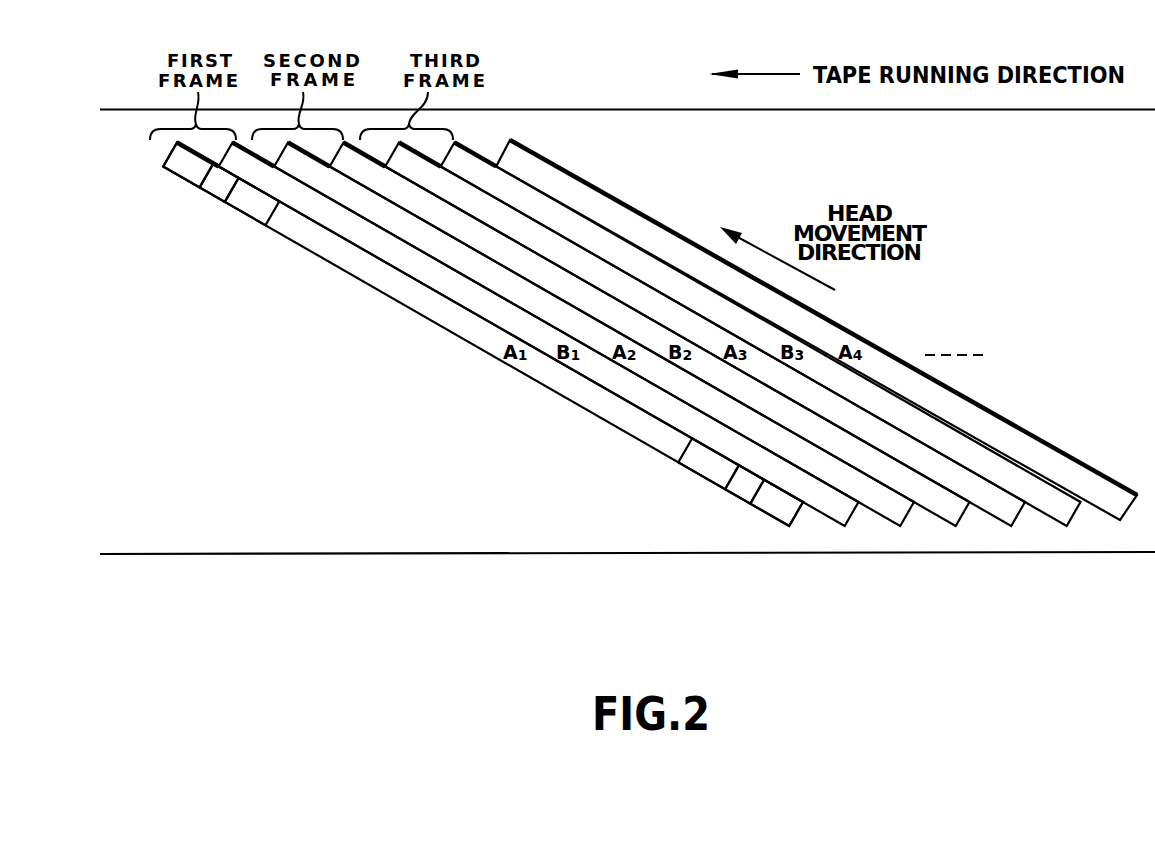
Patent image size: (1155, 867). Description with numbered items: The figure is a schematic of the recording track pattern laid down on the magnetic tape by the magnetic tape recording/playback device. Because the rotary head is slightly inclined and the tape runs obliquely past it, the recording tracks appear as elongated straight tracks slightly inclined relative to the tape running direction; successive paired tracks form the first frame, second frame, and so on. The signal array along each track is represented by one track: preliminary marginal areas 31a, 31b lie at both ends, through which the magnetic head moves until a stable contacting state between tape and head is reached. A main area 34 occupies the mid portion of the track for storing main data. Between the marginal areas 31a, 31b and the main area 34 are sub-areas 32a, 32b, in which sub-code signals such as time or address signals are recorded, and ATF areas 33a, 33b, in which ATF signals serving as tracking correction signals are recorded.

The preliminary marginal area 31a is at (178, 167).
The sub-area 32a is at (215, 190).
The ATF area 33a is at (257, 212).
The preliminary marginal area 31b is at (780, 507).
The sub-area 32b is at (742, 488).
The ATF area 33b is at (697, 465).
The main area 34 is at (542, 380).